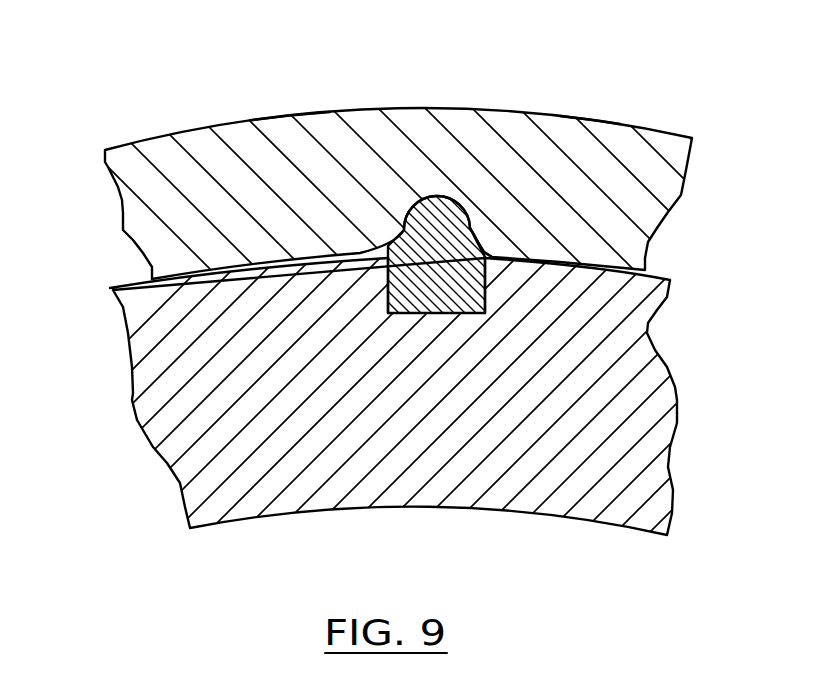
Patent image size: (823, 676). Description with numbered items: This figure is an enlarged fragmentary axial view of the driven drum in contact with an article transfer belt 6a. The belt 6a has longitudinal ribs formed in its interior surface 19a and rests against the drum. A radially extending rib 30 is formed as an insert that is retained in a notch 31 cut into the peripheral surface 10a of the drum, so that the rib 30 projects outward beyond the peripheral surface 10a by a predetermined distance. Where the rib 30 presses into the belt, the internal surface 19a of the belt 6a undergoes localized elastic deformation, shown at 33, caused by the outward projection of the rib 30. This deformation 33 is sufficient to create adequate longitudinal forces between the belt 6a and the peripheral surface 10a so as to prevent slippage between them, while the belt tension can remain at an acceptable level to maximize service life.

The article transfer belt 6a is at (120, 207).
The peripheral surface 10a is at (640, 273).
The rib 30 is at (439, 200).
The notch 31 is at (486, 293).
The localized deformation 33 is at (340, 165).
The interior surface 19a is at (478, 236).